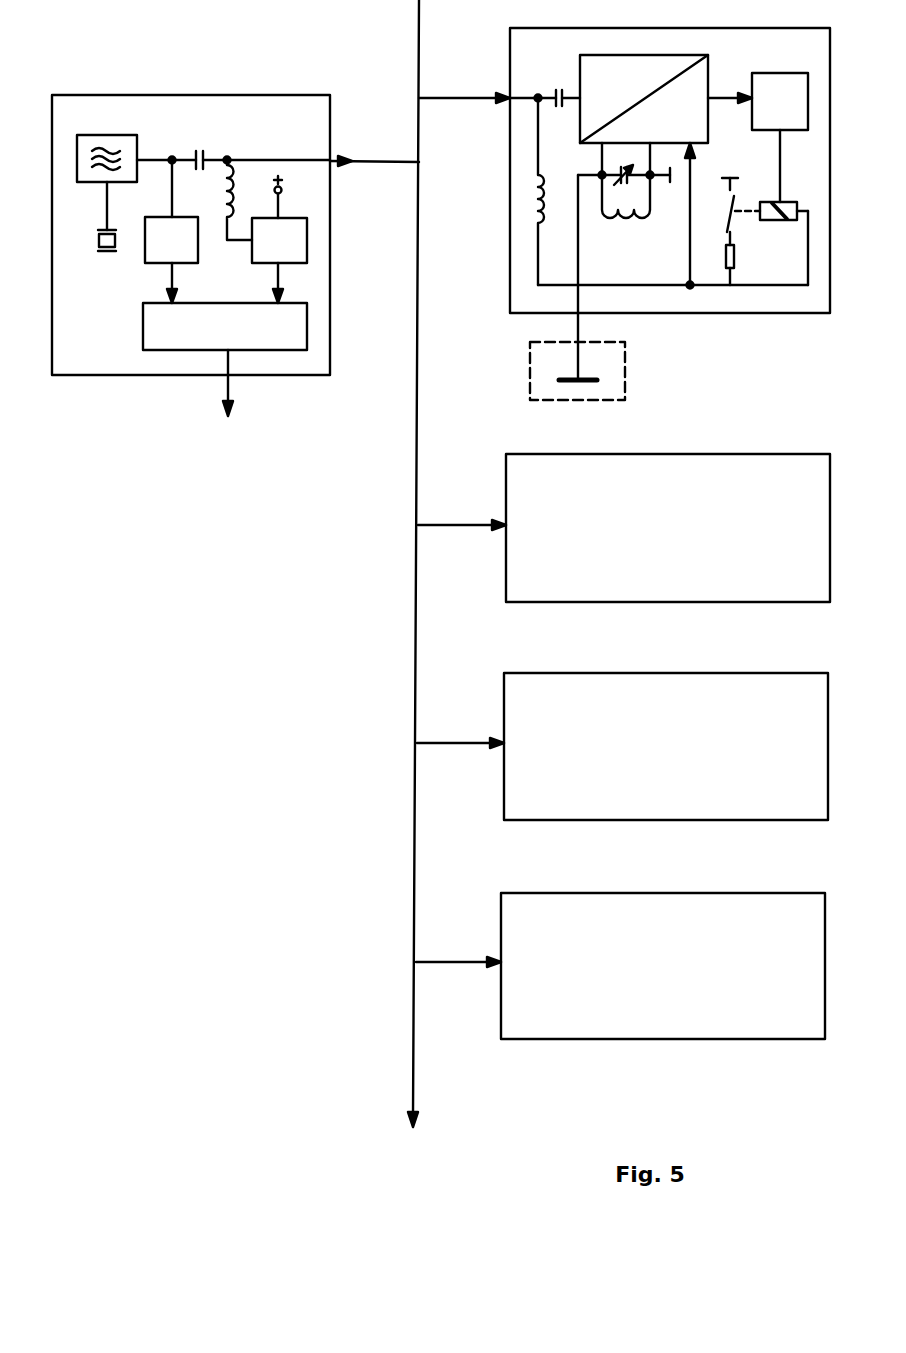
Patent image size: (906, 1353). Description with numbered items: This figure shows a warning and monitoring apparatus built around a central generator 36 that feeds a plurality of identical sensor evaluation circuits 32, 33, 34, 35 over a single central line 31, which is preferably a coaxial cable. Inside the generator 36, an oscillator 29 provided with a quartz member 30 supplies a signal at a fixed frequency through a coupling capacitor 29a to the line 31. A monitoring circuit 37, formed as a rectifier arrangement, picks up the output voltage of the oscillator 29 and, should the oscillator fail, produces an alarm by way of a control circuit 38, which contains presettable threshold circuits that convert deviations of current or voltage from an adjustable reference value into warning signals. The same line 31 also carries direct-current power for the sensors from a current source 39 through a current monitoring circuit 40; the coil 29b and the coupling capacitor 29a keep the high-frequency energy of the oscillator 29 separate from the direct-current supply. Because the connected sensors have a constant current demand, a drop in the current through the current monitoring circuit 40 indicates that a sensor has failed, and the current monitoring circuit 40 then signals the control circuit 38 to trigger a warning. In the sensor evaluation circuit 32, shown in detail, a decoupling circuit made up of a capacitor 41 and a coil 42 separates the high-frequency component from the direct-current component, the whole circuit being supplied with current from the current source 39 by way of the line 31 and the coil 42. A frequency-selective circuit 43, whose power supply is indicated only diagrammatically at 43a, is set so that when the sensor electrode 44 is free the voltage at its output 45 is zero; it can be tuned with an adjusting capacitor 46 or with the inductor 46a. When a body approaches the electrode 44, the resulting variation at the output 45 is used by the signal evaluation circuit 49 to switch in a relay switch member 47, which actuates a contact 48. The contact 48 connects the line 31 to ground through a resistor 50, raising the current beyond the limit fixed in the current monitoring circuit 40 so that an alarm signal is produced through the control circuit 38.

The oscillator 29 is at (107, 146).
The coupling capacitor 29a is at (198, 150).
The coil 29b is at (233, 167).
The quartz member 30 is at (91, 217).
The central line 31 is at (374, 563).
The sensor evaluation circuit 32 is at (670, 170).
The sensor evaluation circuit 33 is at (668, 528).
The sensor evaluation circuit 34 is at (666, 746).
The sensor evaluation circuit 35 is at (663, 966).
The central generator 36 is at (92, 373).
The monitoring circuit 37 is at (171, 211).
The control circuit 38 is at (225, 326).
The current source 39 is at (293, 197).
The current monitoring circuit 40 is at (265, 258).
The decoupling capacitor 41 is at (563, 87).
The coil 42 is at (556, 191).
The frequency-selective circuit 43 is at (698, 83).
The power supply connection 43a is at (697, 177).
The sensor electrode 44 is at (577, 356).
The output 45 is at (730, 113).
The adjusting capacitor 46 is at (638, 165).
The inductor 46a is at (626, 210).
The relay switch member 47 is at (784, 243).
The contact 48 is at (727, 211).
The signal evaluation circuit 49 is at (780, 101).
The resistor 50 is at (715, 265).